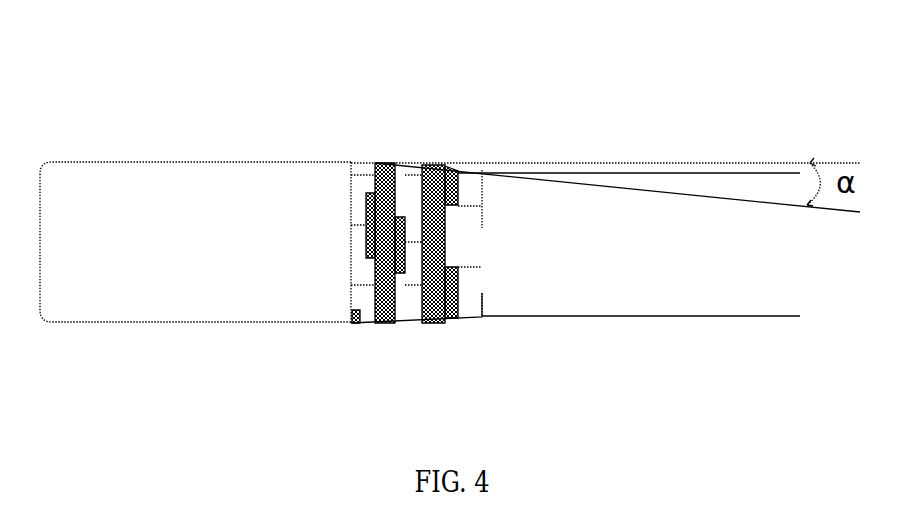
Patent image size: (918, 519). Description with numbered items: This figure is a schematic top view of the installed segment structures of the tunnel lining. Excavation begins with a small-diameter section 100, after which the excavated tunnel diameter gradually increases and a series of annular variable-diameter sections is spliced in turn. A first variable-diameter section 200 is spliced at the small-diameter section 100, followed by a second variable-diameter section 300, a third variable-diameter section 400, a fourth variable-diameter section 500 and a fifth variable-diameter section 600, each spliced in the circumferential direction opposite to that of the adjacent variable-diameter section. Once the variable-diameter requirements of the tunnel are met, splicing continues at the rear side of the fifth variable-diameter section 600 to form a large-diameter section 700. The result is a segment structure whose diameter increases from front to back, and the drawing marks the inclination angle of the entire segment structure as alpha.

The small-diameter section 100 is at (589, 297).
The first variable-diameter section 200 is at (471, 297).
The second variable-diameter section 300 is at (443, 165).
The third variable-diameter section 400 is at (405, 297).
The fourth variable-diameter section 500 is at (384, 163).
The fifth variable-diameter section 600 is at (358, 297).
The large-diameter section 700 is at (321, 185).